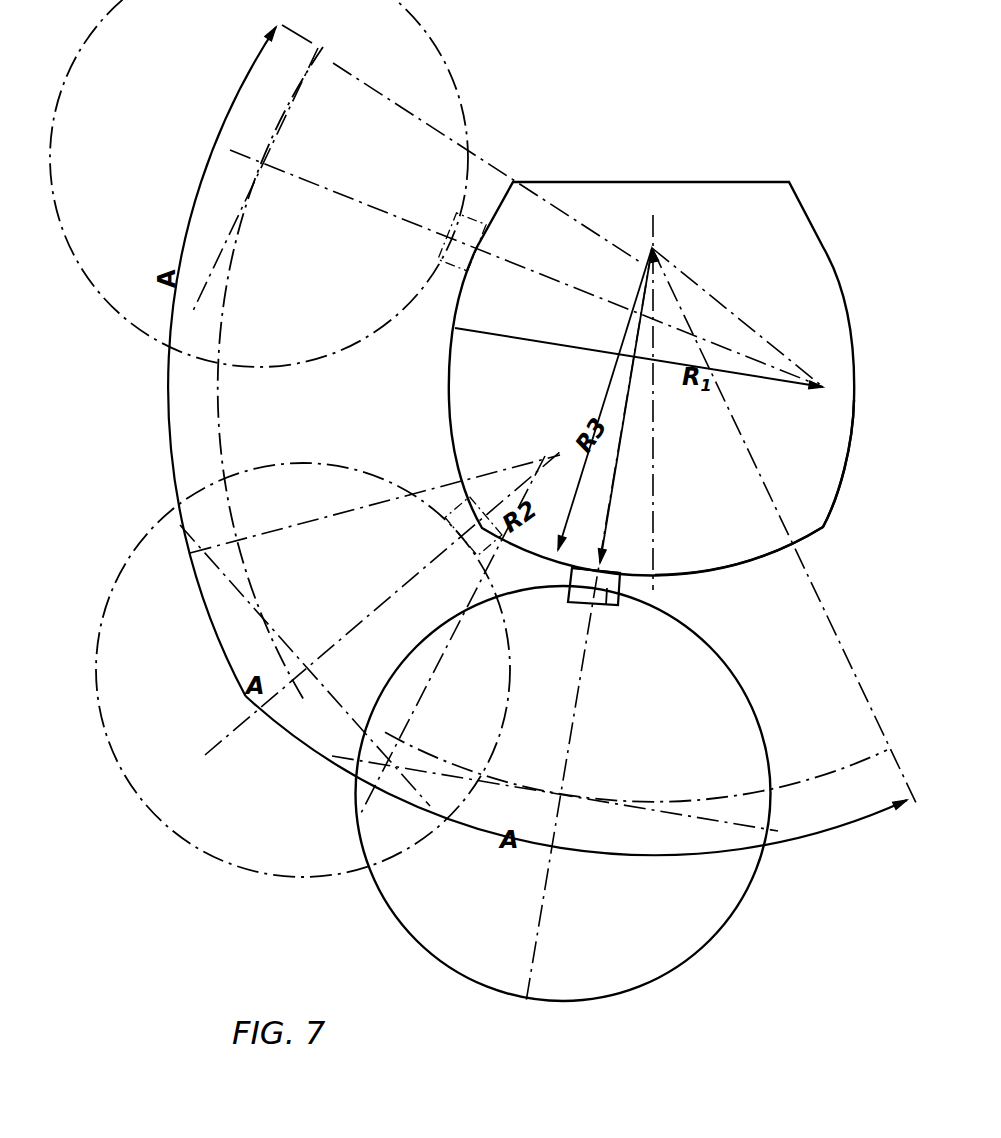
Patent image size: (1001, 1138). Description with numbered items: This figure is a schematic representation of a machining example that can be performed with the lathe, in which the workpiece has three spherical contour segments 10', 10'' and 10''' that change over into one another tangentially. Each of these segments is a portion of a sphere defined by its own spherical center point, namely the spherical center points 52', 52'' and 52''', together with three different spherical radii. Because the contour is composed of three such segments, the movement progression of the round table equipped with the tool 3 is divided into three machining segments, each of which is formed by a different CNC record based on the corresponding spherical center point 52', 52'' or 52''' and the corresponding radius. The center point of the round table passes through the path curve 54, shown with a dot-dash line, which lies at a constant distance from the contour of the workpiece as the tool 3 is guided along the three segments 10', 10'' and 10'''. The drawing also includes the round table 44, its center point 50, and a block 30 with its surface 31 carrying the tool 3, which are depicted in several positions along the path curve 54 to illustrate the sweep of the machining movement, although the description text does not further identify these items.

The tool 3 is at (606, 606).
The spherical contour segment 10' is at (664, 378).
The spherical contour segment 10'' is at (853, 486).
The spherical contour segment 10''' is at (739, 578).
The block 30 is at (620, 566).
The block surface 31 is at (621, 565).
The wheel 44 is at (710, 928).
The wheel axis 50 is at (566, 803).
The spherical center point 52' is at (535, 290).
The spherical center point 52'' is at (382, 615).
The spherical center point 52''' is at (738, 514).
The path curve 54 is at (622, 792).